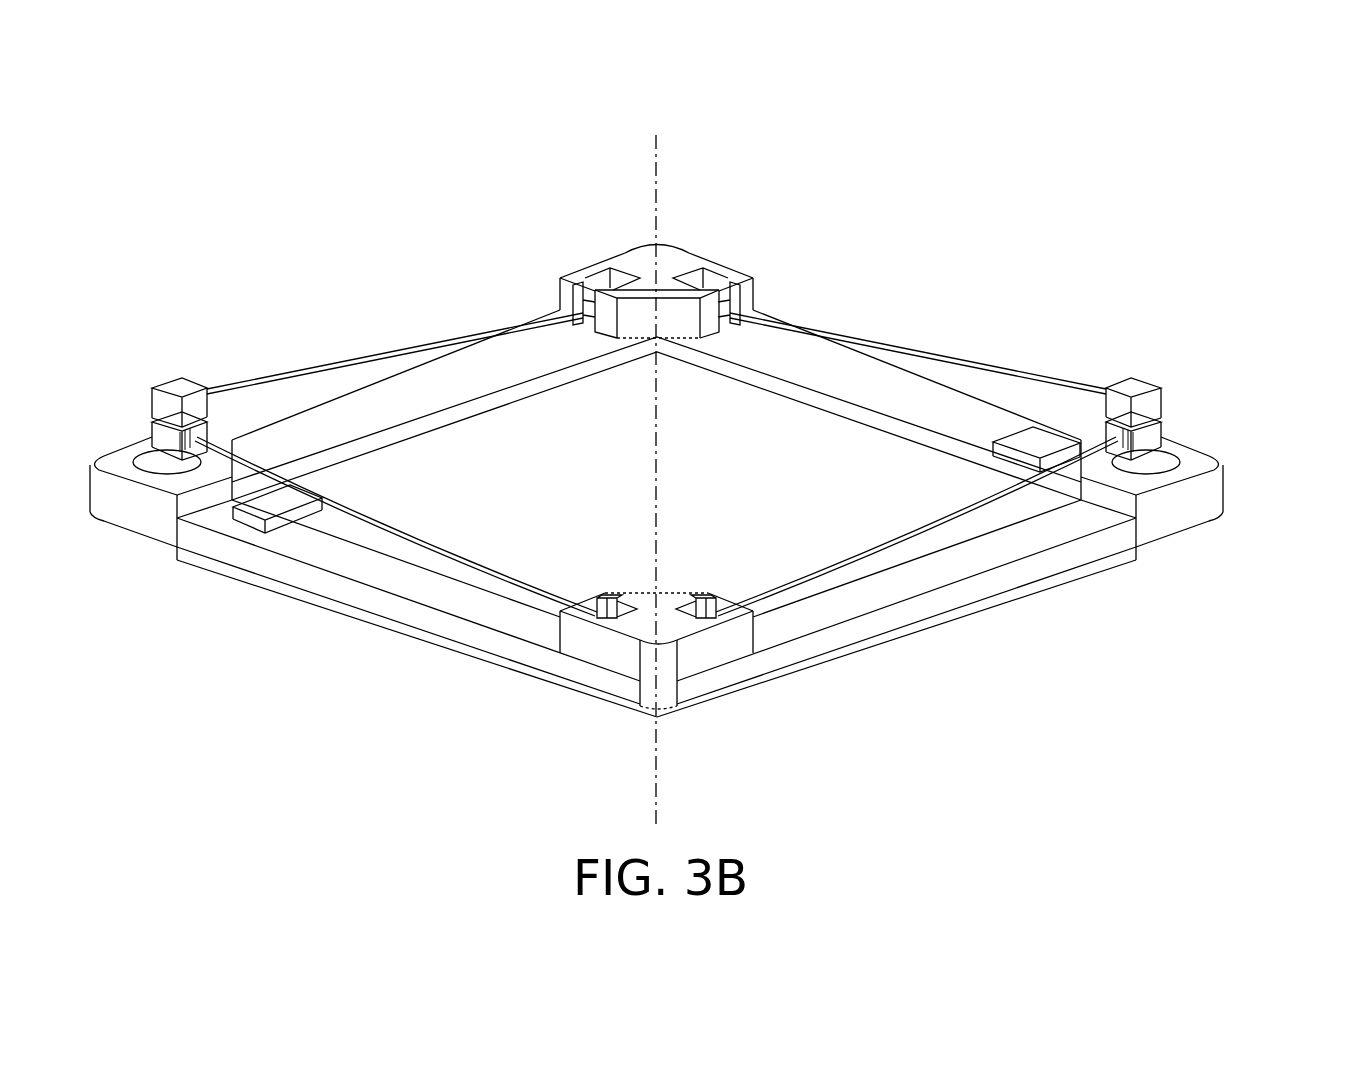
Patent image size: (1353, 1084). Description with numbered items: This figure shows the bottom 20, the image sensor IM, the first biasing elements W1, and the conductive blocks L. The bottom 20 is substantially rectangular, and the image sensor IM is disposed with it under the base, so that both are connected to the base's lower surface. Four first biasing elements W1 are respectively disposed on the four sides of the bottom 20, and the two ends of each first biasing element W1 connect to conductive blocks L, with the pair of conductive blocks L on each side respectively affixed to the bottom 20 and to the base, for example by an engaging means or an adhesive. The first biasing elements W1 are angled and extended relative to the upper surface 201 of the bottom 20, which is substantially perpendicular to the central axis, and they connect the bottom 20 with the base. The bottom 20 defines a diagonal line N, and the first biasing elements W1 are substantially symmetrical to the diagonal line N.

The bottom 20 is at (1224, 481).
The upper surface 201 is at (357, 415).
The image sensor IM is at (893, 492).
The conductive block L is at (178, 418).
The first biasing element W1 is at (258, 380).
The diagonal line N is at (656, 463).